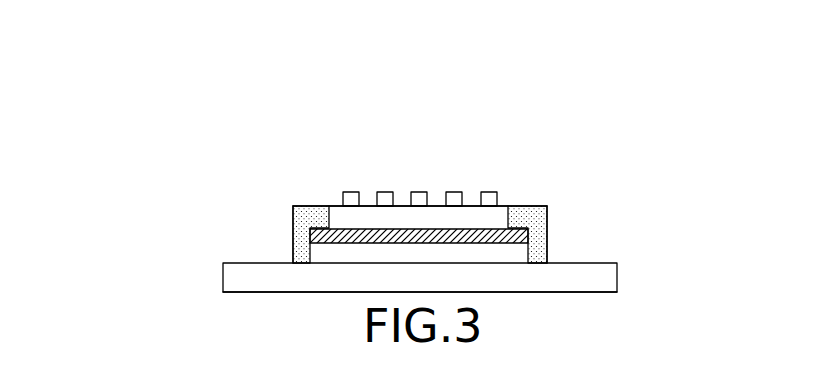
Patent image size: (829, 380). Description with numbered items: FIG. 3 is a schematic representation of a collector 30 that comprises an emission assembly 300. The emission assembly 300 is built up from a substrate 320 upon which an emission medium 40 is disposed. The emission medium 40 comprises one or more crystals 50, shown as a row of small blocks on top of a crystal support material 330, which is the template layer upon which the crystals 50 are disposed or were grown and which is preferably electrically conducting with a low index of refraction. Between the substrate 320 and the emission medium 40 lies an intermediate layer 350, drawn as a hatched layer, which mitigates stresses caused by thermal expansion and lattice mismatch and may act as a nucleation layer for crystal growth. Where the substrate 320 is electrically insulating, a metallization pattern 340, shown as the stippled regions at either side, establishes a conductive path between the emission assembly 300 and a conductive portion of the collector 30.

The emission assembly 300 is at (277, 184).
The collector 30 is at (655, 331).
The substrate 320 is at (344, 252).
The crystal support material 330 is at (493, 222).
The metallization pattern 340 is at (293, 236).
The intermediate layer 350 is at (443, 236).
The emission medium 40 is at (558, 192).
The crystals 50 is at (419, 192).